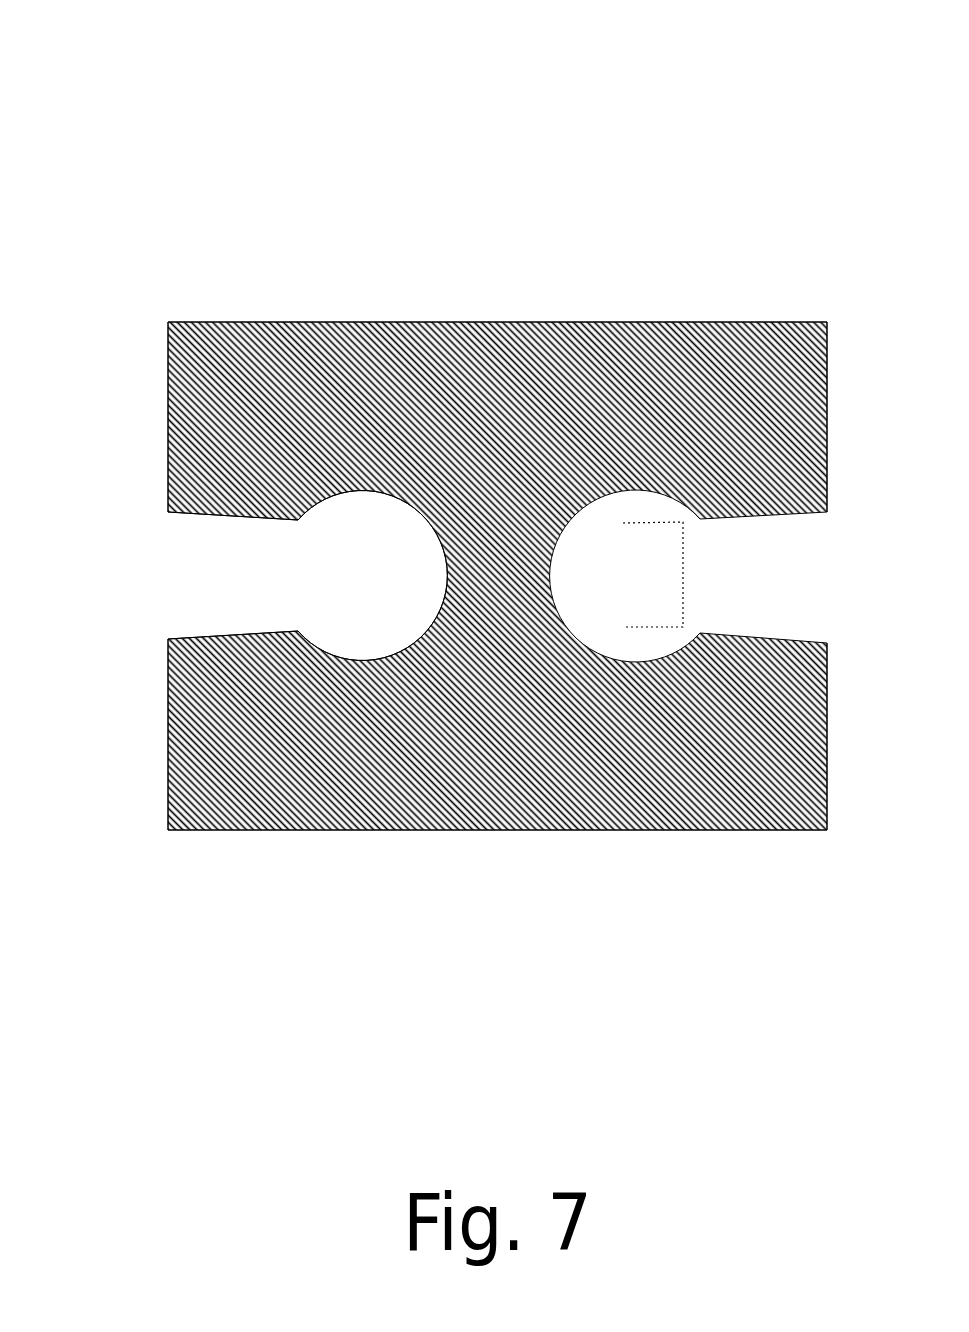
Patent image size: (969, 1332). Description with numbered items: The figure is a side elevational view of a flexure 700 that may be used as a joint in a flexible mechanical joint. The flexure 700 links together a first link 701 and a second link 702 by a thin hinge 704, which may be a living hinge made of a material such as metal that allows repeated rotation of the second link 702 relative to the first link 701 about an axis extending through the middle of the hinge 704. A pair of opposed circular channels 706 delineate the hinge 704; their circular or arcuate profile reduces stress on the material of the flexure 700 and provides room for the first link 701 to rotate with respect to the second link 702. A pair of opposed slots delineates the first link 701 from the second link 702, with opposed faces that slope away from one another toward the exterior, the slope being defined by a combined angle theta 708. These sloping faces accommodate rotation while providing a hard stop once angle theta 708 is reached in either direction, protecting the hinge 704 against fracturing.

The flexure 700 is at (175, 60).
The first link 701 is at (492, 802).
The second link 702 is at (480, 337).
The hinge 704 is at (497, 578).
The circular channels 706 is at (337, 497).
The angle theta 708 is at (715, 572).